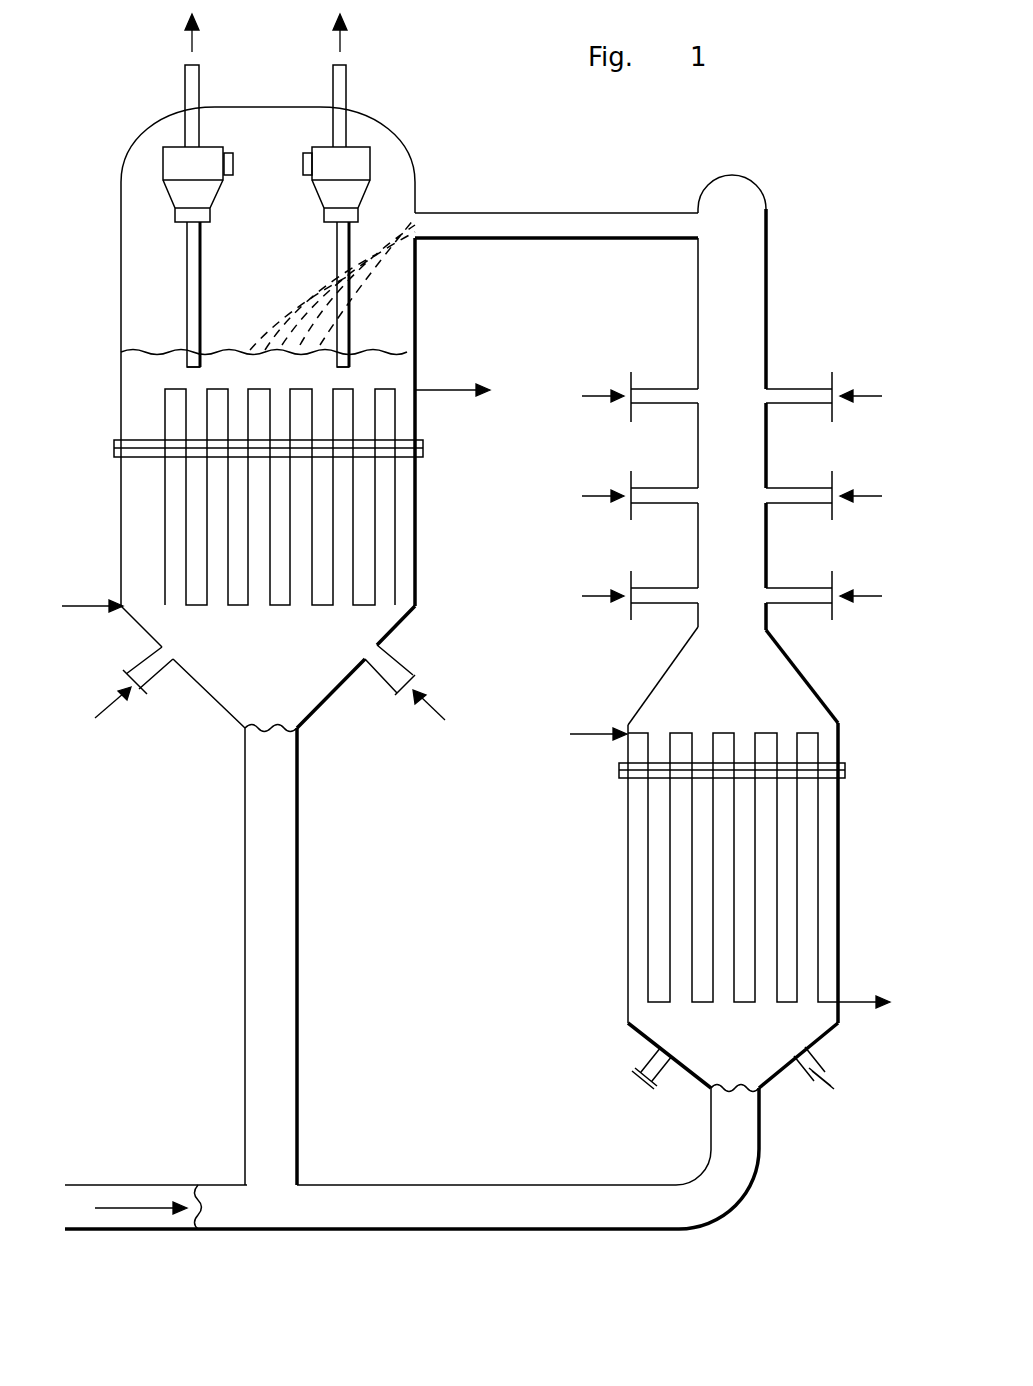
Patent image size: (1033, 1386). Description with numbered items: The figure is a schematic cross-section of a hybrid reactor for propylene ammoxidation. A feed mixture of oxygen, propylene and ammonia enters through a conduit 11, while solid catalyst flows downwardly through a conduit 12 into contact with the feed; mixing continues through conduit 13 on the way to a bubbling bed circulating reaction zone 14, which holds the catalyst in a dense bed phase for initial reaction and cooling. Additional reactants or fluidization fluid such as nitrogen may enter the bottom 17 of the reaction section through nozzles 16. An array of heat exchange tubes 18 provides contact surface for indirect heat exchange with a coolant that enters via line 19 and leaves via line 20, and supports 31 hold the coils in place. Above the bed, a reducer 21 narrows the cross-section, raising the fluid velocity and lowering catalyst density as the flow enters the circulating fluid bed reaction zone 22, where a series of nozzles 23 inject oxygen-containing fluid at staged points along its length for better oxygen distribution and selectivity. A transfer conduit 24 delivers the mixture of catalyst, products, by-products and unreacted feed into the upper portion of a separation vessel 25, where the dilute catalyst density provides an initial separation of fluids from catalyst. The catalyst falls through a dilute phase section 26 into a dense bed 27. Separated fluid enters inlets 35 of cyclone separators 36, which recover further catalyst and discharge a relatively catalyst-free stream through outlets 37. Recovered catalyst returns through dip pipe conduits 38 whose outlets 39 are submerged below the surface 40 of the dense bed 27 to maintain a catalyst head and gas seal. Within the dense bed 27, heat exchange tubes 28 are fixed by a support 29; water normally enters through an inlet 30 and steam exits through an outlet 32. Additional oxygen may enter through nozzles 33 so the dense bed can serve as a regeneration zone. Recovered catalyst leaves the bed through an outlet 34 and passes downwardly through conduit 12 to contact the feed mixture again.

The conduit 11 is at (124, 1185).
The conduit 12 is at (298, 1025).
The conduit 13 is at (380, 1185).
The bubbling bed circulating reaction zone 14 is at (839, 868).
The nozzles 16 is at (646, 1068).
The bottom 17 is at (702, 1076).
The heat exchange tubes 18 is at (648, 898).
The line 19 is at (589, 736).
The line 20 is at (856, 1002).
The reducer 21 is at (796, 667).
The circulating fluid bed reaction zone 22 is at (768, 524).
The nozzles 23 is at (662, 488).
The transfer conduit 24 is at (563, 213).
The separation vessel 25 is at (121, 293).
The dilute phase section 26 is at (290, 221).
The dense bed 27 is at (158, 370).
The heat exchange tubes 28 is at (136, 497).
The support 29 is at (423, 466).
The inlet 30 is at (97, 606).
The supports 31 is at (845, 775).
The outlet 32 is at (446, 390).
The nozzles 33 is at (403, 661).
The outlet 34 is at (302, 725).
The inlets 35 is at (303, 162).
The cyclone separators 36 is at (163, 162).
The outlets 37 is at (185, 91).
The dip pipe conduits 38 is at (187, 259).
The outlets 39 is at (193, 364).
The surface 40 is at (160, 350).